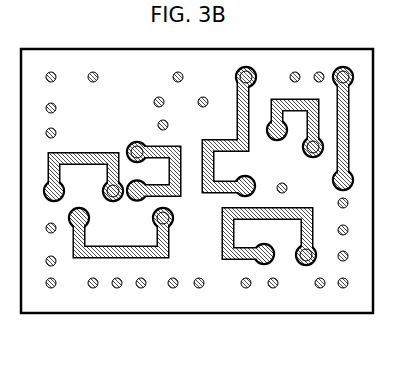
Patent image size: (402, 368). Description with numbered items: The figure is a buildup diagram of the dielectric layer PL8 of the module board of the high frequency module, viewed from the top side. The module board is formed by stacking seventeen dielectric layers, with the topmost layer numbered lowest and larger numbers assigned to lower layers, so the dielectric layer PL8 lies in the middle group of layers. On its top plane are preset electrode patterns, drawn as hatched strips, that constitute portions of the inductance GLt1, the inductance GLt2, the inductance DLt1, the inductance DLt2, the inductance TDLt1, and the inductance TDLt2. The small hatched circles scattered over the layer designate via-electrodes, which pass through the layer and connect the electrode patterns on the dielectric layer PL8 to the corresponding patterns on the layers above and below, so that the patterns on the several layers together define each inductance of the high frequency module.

The dielectric layer PL8 is at (193, 313).
The inductance DLt2 is at (95, 153).
The inductance DLt1 is at (147, 148).
The inductance TDLt1 is at (213, 173).
The inductance TDLt2 is at (274, 103).
The inductance GLt2 is at (113, 248).
The inductance GLt1 is at (278, 213).